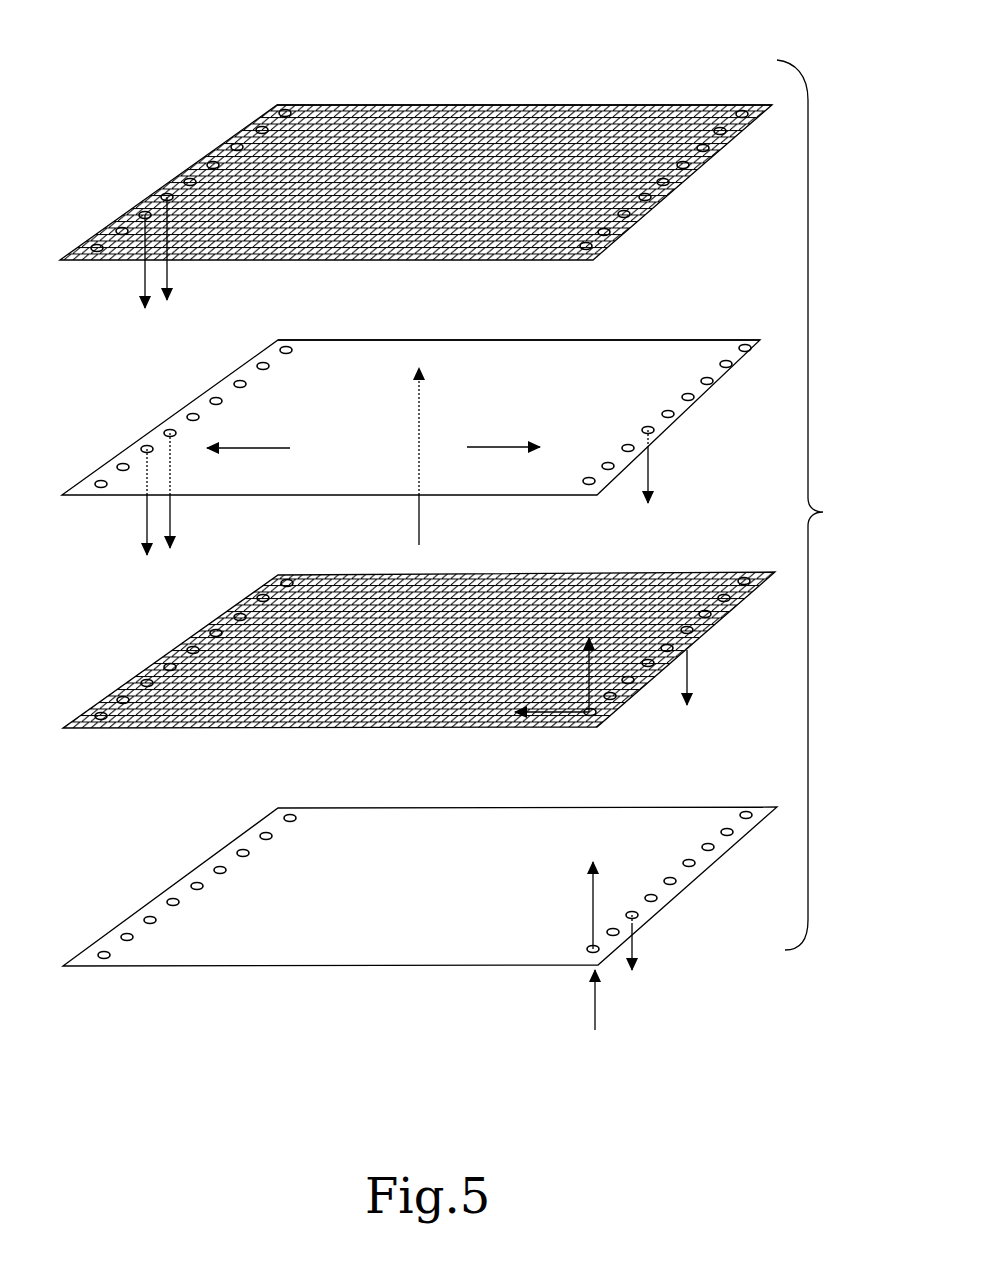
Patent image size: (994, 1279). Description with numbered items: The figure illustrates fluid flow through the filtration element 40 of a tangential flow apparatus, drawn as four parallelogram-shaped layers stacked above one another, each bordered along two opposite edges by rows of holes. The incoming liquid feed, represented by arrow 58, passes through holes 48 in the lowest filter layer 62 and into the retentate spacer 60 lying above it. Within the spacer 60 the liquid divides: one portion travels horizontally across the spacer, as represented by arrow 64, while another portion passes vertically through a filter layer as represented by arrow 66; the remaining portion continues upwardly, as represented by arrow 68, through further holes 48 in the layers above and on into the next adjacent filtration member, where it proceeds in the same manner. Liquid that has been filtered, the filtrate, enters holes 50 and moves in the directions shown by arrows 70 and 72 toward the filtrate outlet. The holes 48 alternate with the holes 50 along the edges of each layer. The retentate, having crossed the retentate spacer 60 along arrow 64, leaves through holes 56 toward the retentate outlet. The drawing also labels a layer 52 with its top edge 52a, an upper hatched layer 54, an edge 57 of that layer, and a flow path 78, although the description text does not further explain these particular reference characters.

The filtration element 40 is at (826, 505).
The holes 48 is at (717, 153).
The holes 50 is at (586, 242).
The separator layer 52 is at (411, 417).
The separator layer top edge 52a is at (742, 344).
The upper membrane layer 54 is at (416, 182).
The holes 56 is at (284, 110).
The top edge 57 is at (430, 118).
The liquid feed arrow 58 is at (598, 993).
The retentate spacer 60 is at (422, 680).
The filter layer 62 is at (420, 886).
The horizontal flow arrow 64 is at (545, 715).
The vertical flow arrow 66 is at (415, 440).
The upward flow arrow 68 is at (580, 657).
The filtrate flow arrow 70 is at (165, 277).
The filtrate flow arrow 72 is at (658, 450).
The flow path 78 is at (145, 277).